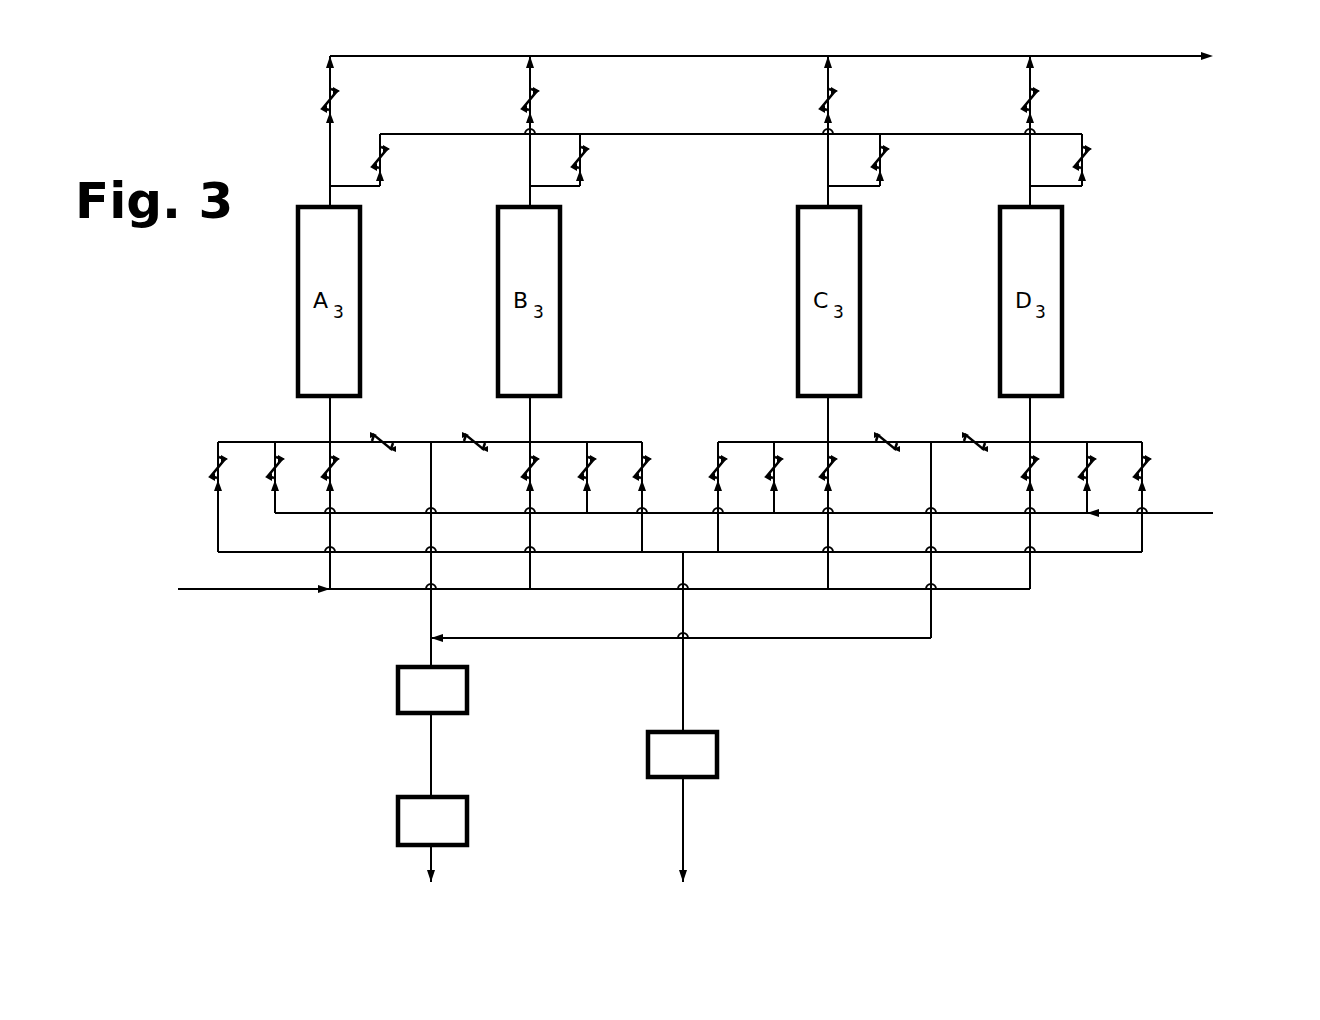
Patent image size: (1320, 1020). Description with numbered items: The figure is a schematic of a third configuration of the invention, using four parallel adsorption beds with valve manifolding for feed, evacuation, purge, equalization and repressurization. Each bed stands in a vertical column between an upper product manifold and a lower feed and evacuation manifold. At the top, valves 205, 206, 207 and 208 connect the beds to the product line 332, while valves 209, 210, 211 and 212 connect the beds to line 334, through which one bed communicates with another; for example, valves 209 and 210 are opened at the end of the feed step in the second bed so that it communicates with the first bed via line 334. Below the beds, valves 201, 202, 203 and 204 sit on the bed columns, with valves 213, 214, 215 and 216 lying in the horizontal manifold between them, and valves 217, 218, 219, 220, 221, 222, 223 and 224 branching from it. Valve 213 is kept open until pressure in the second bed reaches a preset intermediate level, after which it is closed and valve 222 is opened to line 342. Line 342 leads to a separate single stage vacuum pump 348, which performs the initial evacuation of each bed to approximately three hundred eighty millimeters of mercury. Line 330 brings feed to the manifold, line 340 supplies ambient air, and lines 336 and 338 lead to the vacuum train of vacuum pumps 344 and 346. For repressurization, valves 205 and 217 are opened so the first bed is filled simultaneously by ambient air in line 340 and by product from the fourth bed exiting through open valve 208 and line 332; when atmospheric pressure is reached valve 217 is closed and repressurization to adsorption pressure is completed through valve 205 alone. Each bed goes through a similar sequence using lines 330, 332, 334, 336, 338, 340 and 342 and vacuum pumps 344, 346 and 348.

The valve 201 is at (338, 470).
The valve 202 is at (528, 470).
The valve 203 is at (822, 468).
The valve 204 is at (1023, 462).
The valve 205 is at (323, 110).
The valve 206 is at (525, 110).
The valve 207 is at (833, 112).
The valve 208 is at (1035, 112).
The valve 209 is at (386, 162).
The valve 210 is at (586, 162).
The valve 211 is at (886, 162).
The valve 212 is at (1088, 157).
The valve 213 is at (392, 440).
The valve 214 is at (468, 437).
The valve 215 is at (886, 443).
The valve 216 is at (978, 432).
The valve 217 is at (268, 468).
The valve 218 is at (580, 468).
The valve 219 is at (768, 470).
The valve 220 is at (1098, 467).
The valve 221 is at (212, 472).
The valve 222 is at (637, 470).
The valve 223 is at (713, 470).
The valve 224 is at (1150, 467).
The line 330 is at (256, 590).
The line 332 is at (1133, 55).
The line 334 is at (743, 137).
The line 336 is at (432, 610).
The line 338 is at (932, 605).
The line 340 is at (1178, 513).
The line 342 is at (684, 669).
The vacuum pump 344 is at (468, 693).
The vacuum pump 346 is at (468, 828).
The vacuum pump 348 is at (718, 750).